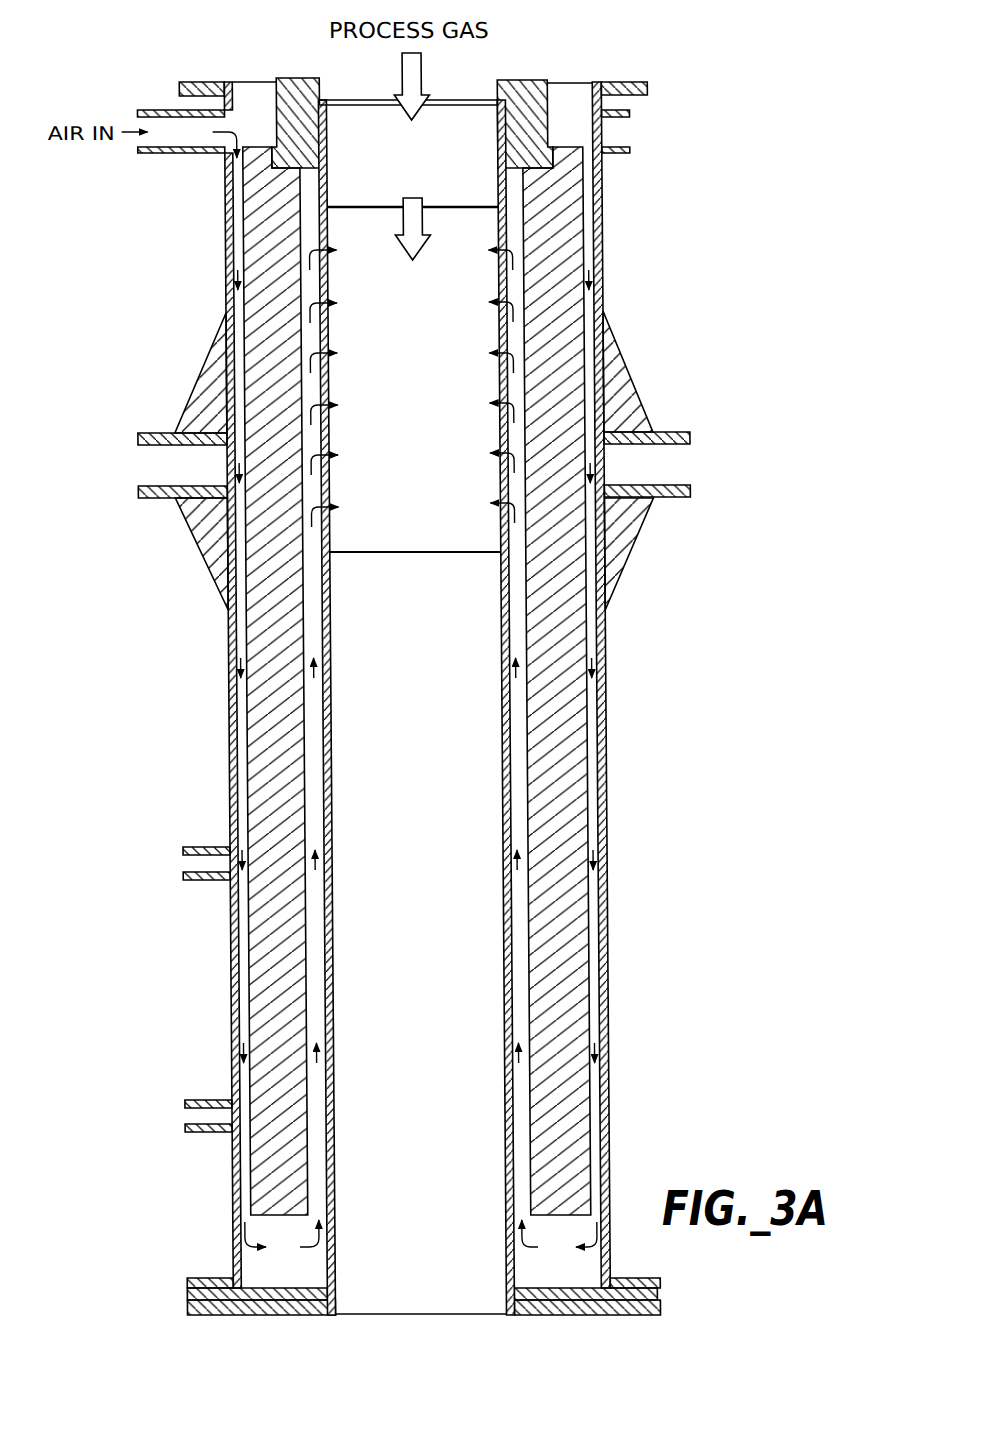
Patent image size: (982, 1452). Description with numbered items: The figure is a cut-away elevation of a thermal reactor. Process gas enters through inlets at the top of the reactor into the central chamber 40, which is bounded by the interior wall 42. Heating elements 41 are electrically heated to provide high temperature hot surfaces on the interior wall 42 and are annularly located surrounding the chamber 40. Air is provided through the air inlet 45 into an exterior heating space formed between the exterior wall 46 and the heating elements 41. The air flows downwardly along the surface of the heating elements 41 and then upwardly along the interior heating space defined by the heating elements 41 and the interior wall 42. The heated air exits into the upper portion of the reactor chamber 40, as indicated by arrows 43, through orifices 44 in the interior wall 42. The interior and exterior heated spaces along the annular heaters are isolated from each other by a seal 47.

The central chamber 40 is at (427, 409).
The heating elements 41 is at (254, 966).
The interior wall 42 is at (327, 733).
The arrows 43 is at (331, 510).
The orifices 44 is at (331, 307).
The air inlet 45 is at (182, 155).
The exterior wall 46 is at (226, 255).
The seal 47 is at (298, 84).